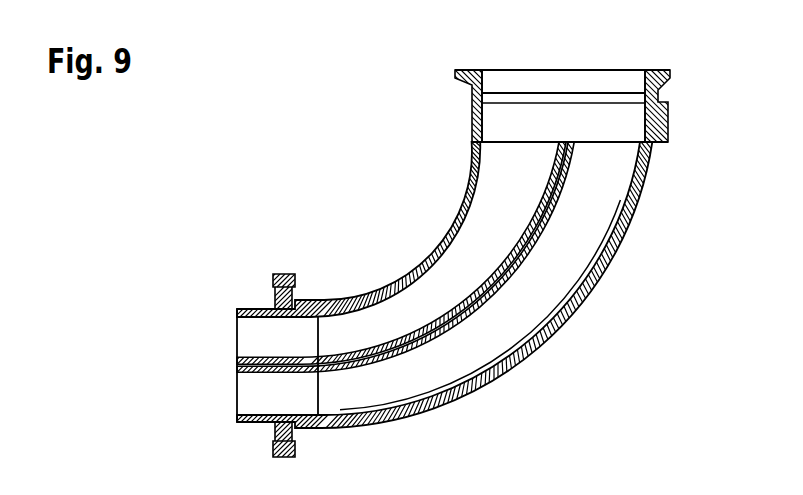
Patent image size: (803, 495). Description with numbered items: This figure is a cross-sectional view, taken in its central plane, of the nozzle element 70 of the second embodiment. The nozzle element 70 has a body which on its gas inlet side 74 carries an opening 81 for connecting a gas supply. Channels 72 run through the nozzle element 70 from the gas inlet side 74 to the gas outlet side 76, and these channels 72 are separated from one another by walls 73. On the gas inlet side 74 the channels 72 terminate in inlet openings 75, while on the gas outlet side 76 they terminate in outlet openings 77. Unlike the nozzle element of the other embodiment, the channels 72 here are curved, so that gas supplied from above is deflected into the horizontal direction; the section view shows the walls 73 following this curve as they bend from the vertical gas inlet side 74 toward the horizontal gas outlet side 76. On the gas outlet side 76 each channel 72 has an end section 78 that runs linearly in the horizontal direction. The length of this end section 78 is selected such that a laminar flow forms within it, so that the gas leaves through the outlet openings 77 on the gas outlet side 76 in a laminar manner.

The nozzle element 70 is at (349, 139).
The channels 72 is at (383, 327).
The walls 73 is at (523, 256).
The gas inlet side 74 is at (521, 139).
The inlet openings 75 is at (547, 142).
The gas outlet side 76 is at (236, 328).
The outlet openings 77 is at (237, 343).
The end section 78 is at (277, 400).
The opening 81 is at (642, 82).